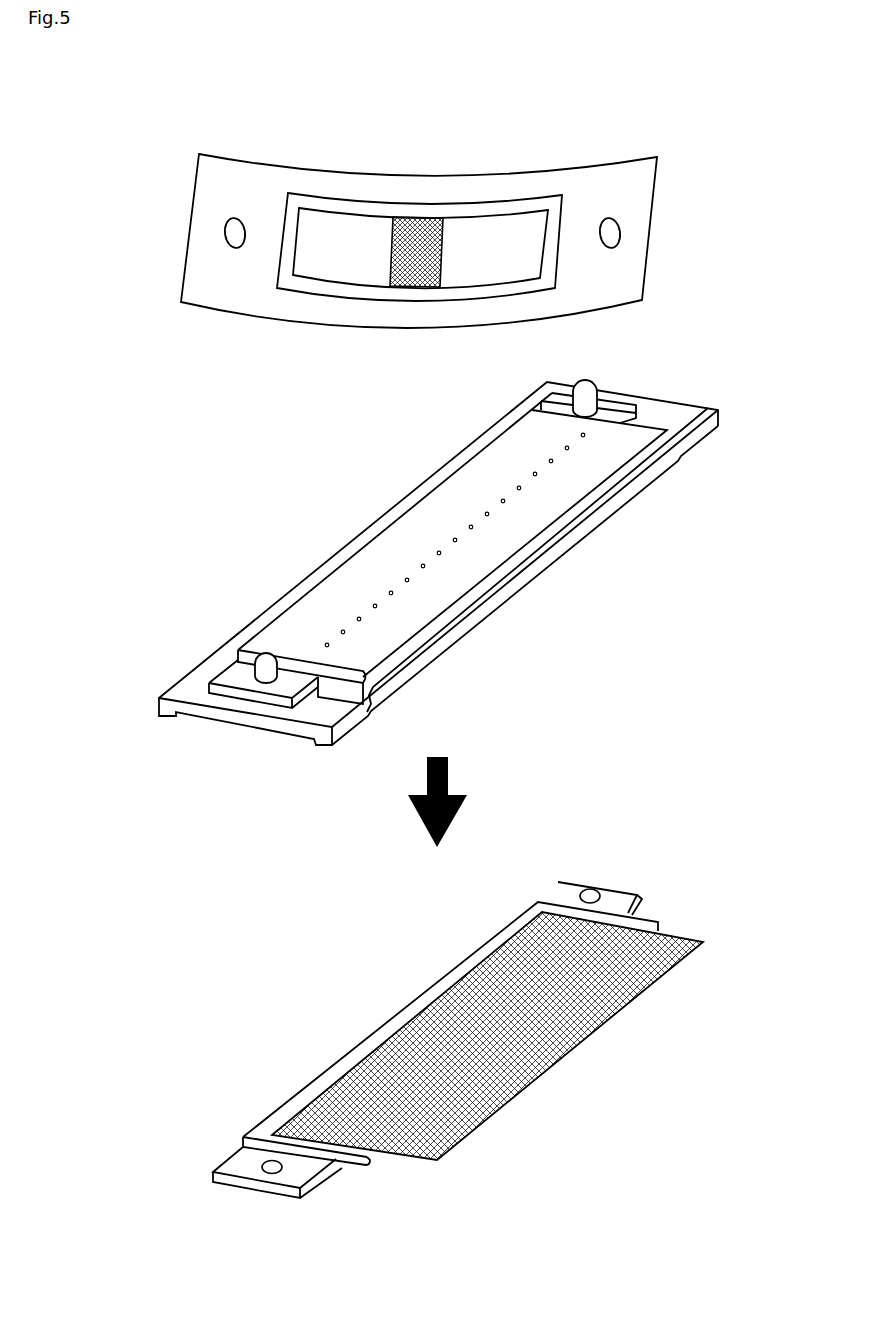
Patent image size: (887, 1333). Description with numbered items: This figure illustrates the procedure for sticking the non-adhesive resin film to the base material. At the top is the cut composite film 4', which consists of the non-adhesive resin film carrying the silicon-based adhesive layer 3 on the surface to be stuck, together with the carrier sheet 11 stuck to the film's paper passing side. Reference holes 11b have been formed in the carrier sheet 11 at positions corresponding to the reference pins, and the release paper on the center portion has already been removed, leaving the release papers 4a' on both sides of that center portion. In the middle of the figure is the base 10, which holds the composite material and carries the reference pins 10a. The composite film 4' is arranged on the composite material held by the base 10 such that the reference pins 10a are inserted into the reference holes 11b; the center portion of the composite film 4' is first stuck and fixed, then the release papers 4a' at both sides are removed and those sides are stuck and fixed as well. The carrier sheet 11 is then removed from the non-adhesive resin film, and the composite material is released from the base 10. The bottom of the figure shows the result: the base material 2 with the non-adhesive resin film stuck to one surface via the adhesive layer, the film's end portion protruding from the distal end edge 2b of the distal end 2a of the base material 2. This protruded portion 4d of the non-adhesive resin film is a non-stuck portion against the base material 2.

The base material 2 is at (263, 1129).
The distal end 2a is at (355, 1167).
The distal end edge 2b is at (377, 1162).
The silicon-based adhesive layer 3 is at (440, 226).
The composite film 4' is at (427, 206).
The release papers 4a' is at (430, 202).
The protruded portion 4d is at (520, 1070).
The base 10 is at (670, 415).
The reference pins 10a is at (588, 383).
The carrier sheet 11 is at (270, 172).
The reference holes 11b is at (235, 232).